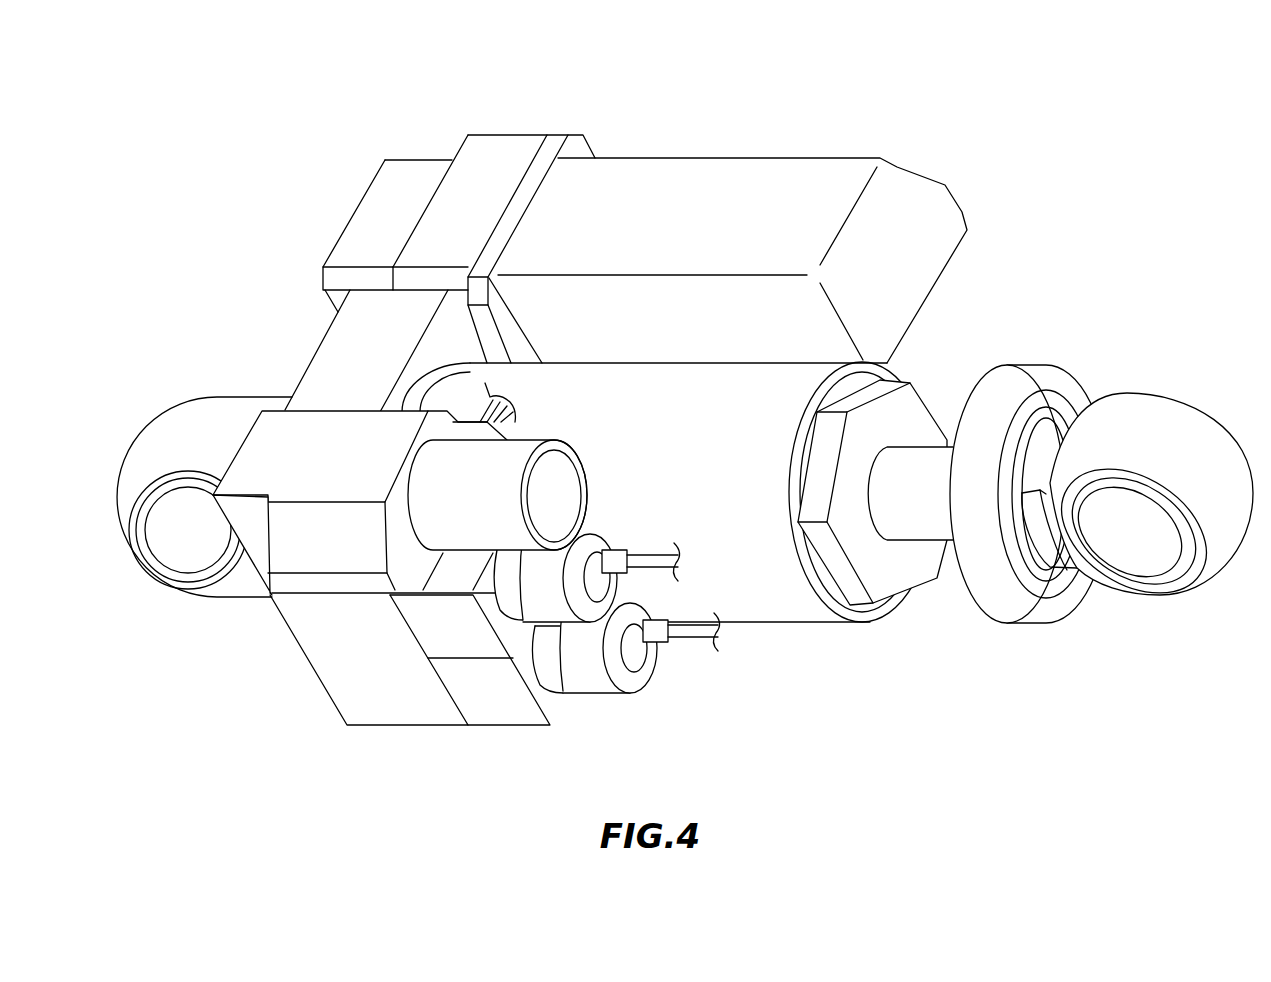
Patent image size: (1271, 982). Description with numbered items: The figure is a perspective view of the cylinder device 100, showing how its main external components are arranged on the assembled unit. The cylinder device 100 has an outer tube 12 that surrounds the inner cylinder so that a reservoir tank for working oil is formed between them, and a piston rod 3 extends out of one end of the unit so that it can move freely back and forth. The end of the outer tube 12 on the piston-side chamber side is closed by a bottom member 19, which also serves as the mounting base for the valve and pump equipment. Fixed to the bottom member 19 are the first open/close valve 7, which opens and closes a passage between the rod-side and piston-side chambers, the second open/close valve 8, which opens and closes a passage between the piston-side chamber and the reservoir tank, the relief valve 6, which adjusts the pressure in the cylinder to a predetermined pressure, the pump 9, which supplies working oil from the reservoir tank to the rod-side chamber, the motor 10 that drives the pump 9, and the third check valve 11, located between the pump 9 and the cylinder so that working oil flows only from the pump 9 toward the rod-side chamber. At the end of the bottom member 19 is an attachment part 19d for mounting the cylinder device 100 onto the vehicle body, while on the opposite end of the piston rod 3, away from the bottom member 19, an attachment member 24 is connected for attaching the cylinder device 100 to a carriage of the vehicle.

The cylinder device 100 is at (224, 128).
The third check valve 11 is at (400, 167).
The pump 9 is at (483, 168).
The motor 10 is at (683, 185).
The bottom member 19 is at (307, 367).
The attachment part 19d is at (157, 410).
The relief valve 6 is at (305, 543).
The first open/close valve 7 is at (458, 630).
The second open/close valve 8 is at (500, 700).
The outer tube 12 is at (803, 623).
The piston rod 3 is at (922, 540).
The attachment member 24 is at (1170, 397).